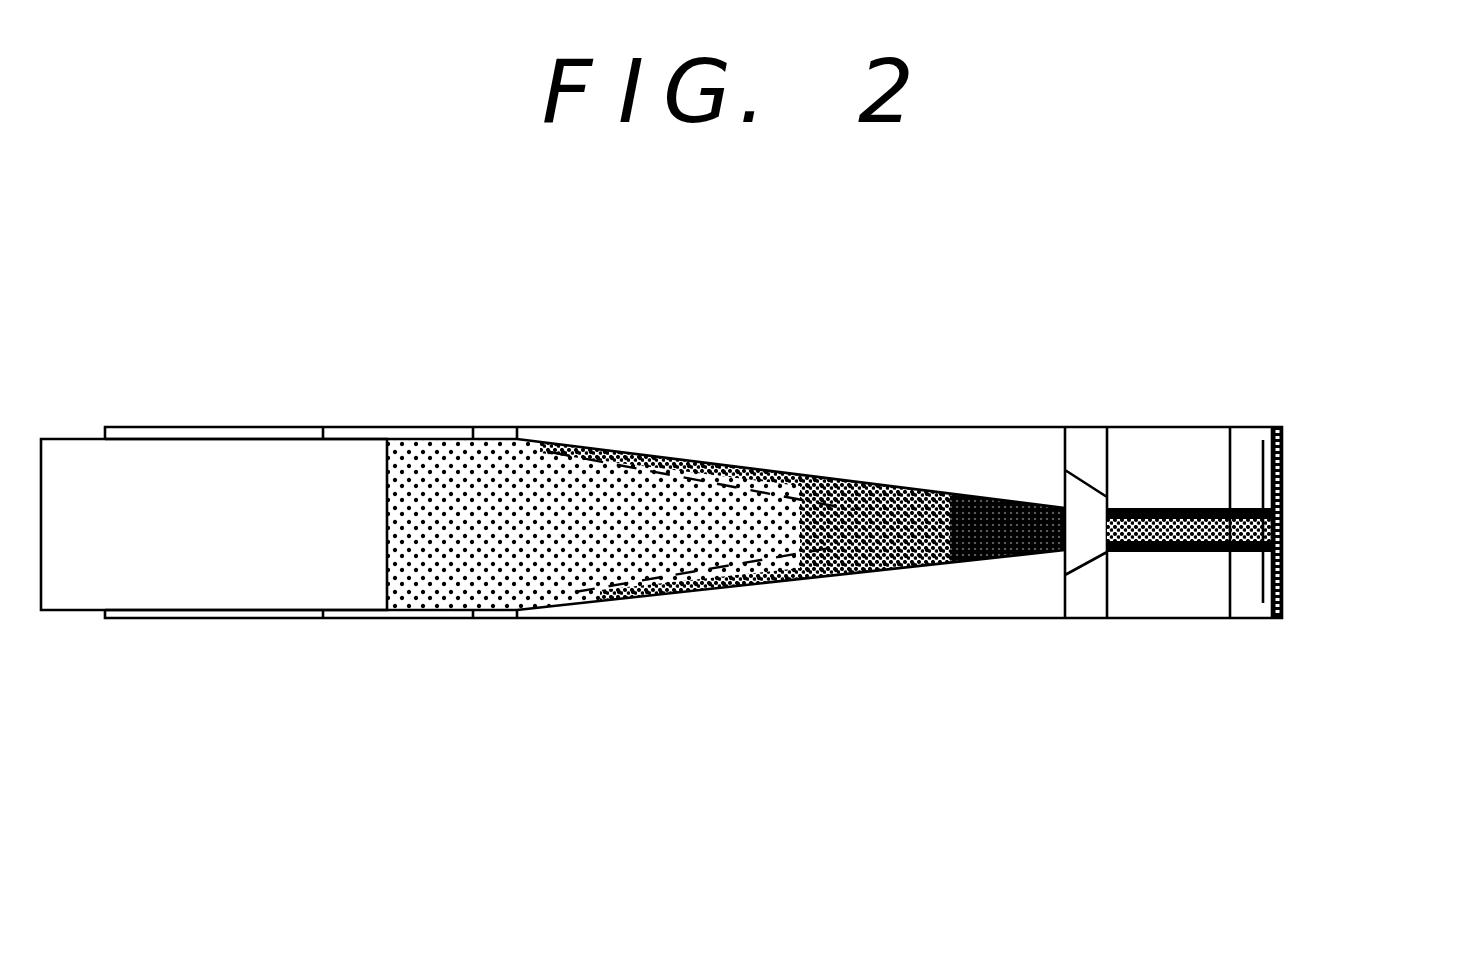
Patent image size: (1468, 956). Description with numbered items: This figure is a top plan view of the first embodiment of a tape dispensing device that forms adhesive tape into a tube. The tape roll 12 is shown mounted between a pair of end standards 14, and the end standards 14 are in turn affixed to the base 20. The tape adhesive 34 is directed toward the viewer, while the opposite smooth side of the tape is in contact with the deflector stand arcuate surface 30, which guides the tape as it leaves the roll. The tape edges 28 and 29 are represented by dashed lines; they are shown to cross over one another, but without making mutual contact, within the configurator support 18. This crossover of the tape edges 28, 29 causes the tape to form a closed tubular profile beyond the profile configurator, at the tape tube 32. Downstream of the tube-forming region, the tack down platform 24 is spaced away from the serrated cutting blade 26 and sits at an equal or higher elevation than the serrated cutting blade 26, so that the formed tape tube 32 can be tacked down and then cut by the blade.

The tape roll 12 is at (182, 510).
The end standards 14 is at (218, 428).
The configurator support 18 is at (1080, 598).
The base 20 is at (940, 592).
The tack down platform 24 is at (1247, 592).
The serrated cutting blade 26 is at (1282, 468).
The tape edge 28 is at (802, 480).
The tape edge 29 is at (800, 575).
The deflector stand arcuate surface 30 is at (497, 430).
The tape tube 32 is at (1187, 507).
The tape adhesive 34 is at (485, 547).